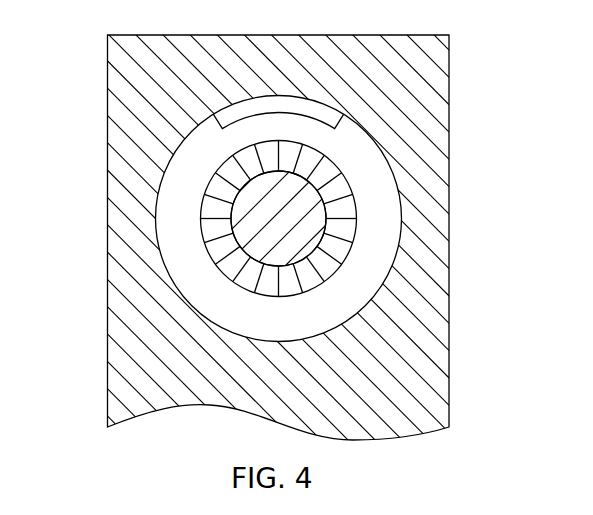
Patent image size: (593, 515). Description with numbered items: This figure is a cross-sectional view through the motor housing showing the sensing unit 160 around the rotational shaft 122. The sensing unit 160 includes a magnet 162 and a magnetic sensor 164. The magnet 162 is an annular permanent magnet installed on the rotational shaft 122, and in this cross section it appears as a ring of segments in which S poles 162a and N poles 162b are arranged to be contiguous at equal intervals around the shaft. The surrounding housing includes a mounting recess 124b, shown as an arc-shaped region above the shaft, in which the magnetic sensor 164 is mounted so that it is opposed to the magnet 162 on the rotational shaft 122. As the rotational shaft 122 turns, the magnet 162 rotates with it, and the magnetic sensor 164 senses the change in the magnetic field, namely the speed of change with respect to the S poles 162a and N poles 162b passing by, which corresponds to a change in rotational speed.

The rotational shaft 122 is at (298, 236).
The mounting recess 124b is at (196, 162).
The sensing unit 160 is at (523, 175).
The magnet 162 is at (275, 219).
The S poles 162a is at (208, 208).
The N poles 162b is at (217, 227).
The magnetic sensor 164 is at (332, 115).